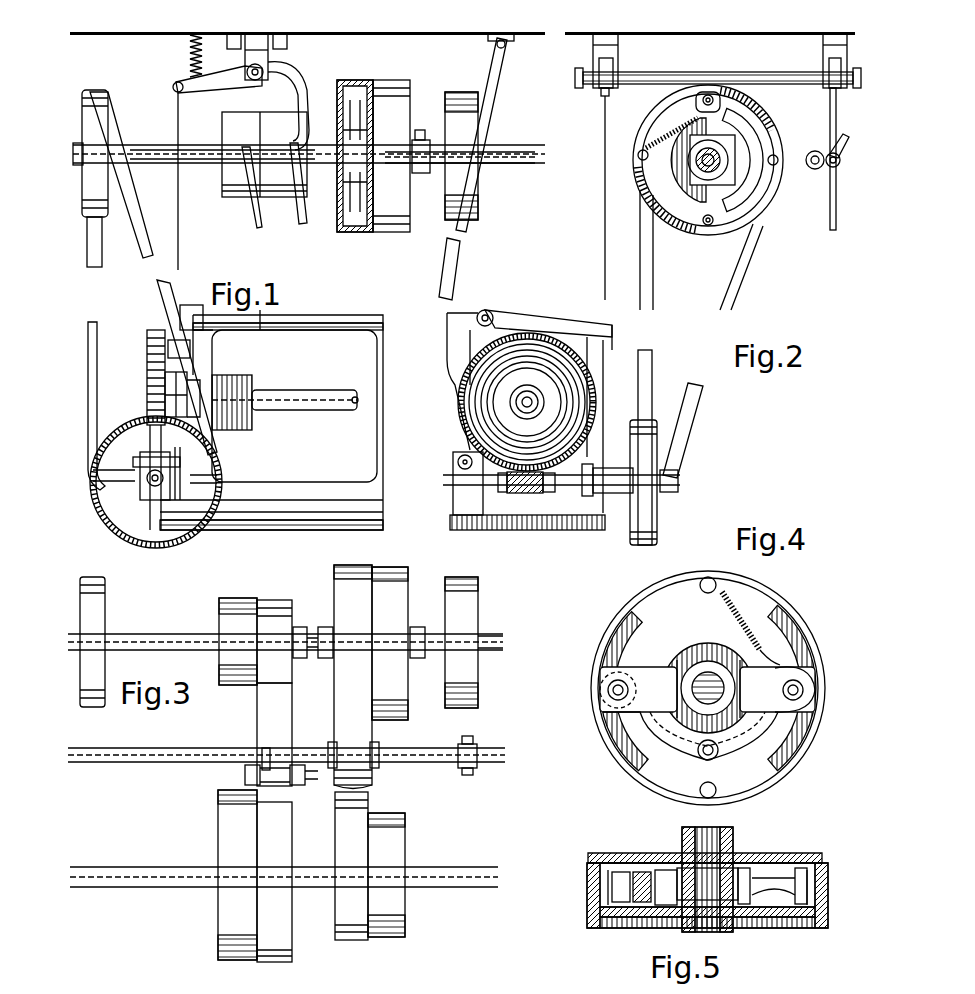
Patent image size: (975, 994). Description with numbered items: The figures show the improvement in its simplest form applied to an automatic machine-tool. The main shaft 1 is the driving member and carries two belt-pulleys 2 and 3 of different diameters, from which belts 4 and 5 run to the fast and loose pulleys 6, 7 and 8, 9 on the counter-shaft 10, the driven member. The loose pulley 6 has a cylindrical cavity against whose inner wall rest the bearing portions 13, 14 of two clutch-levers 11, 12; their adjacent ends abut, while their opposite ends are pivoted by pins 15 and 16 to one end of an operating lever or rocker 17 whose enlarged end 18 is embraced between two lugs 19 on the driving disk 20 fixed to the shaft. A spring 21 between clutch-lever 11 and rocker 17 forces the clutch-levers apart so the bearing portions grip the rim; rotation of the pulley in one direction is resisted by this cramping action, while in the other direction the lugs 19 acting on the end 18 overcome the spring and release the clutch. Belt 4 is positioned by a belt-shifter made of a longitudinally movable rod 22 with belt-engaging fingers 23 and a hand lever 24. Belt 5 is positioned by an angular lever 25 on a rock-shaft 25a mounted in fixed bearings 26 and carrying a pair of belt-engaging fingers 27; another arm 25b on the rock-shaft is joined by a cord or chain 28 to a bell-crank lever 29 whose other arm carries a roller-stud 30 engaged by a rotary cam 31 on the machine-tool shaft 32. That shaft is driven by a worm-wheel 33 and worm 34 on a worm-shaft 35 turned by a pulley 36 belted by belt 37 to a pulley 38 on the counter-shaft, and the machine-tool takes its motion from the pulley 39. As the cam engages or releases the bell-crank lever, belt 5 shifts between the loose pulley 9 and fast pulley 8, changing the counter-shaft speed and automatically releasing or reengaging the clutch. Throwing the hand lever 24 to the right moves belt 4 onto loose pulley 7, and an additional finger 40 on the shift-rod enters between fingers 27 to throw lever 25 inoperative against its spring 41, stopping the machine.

In FIG. 3, the main shaft 1 is at (448, 866).
In FIG. 3, the belt-pulley 2 is at (405, 934).
In FIG. 3, the belt-pulley 3 is at (218, 950).
In FIG. 3, the belt 4 is at (374, 782).
In FIG. 3, the belt 5 is at (257, 724).
In FIG. 1, the loose pulley 6 is at (348, 80).
In FIG. 2, the loose pulley 6 is at (784, 196).
In FIG. 3, the loose pulley 6 is at (334, 575).
In FIG. 4, the loose pulley 6 is at (767, 583).
In FIG. 5, the loose pulley 6 is at (587, 896).
In FIG. 1, the loose pulley 7 is at (405, 80).
In FIG. 3, the loose pulley 7 is at (402, 567).
In FIG. 3, the fast pulley 8 is at (232, 600).
In FIG. 3, the loose pulley 9 is at (288, 602).
In FIG. 1, the counter-shaft 10 is at (500, 152).
In FIG. 2, the counter-shaft 10 is at (700, 162).
In FIG. 3, the counter-shaft 10 is at (491, 634).
In FIG. 2, the clutch-lever 11 is at (679, 160).
In FIG. 4, the clutch-lever 11 is at (708, 687).
In FIG. 5, the clutch-lever 11 is at (780, 905).
In FIG. 2, the clutch-lever 12 is at (733, 192).
In FIG. 4, the clutch-lever 12 is at (690, 748).
In FIG. 4, the bearing portion 13 is at (705, 577).
In FIG. 5, the bearing portion 13 is at (737, 850).
In FIG. 5, the bearing portion 14 is at (700, 830).
In FIG. 4, the pin 15 is at (637, 691).
In FIG. 5, the pin 15 is at (640, 928).
In FIG. 4, the pin 16 is at (600, 692).
In FIG. 2, the operating lever or rocker 17 is at (728, 158).
In FIG. 4, the operating lever or rocker 17 is at (707, 690).
In FIG. 5, the operating lever or rocker 17 is at (667, 870).
In FIG. 4, the enlarged end 18 is at (803, 682).
In FIG. 4, the lugs 19 is at (810, 703).
In FIG. 5, the lugs 19 is at (815, 862).
In FIG. 1, the driving disk 20 is at (340, 228).
In FIG. 5, the driving disk 20 is at (645, 853).
In FIG. 2, the spring 21 is at (672, 129).
In FIG. 4, the spring 21 is at (765, 632).
In FIG. 1, the rod 22 is at (193, 165).
In FIG. 3, the rod 22 is at (429, 748).
In FIG. 3, the belt-engaging fingers 23 is at (330, 742).
In FIG. 1, the hand lever 24 is at (465, 228).
In FIG. 3, the hand lever 24 is at (470, 743).
In FIG. 1, the angular lever 25 is at (299, 106).
In FIG. 1, the rock-shaft 25a is at (266, 86).
In FIG. 2, the rock-shaft 25a is at (744, 72).
In FIG. 1, the arm 25b is at (196, 92).
In FIG. 2, the arm 25b is at (603, 92).
In FIG. 1, the fixed bearings 26 is at (272, 52).
In FIG. 2, the fixed bearings 26 is at (620, 60).
In FIG. 1, the belt-engaging fingers 27 is at (303, 225).
In FIG. 2, the belt-engaging fingers 27 is at (831, 127).
In FIG. 3, the belt-engaging fingers 27 is at (245, 775).
In FIG. 1, the cord or chain 28 is at (178, 248).
In FIG. 2, the cord or chain 28 is at (619, 198).
In FIG. 1, the bell-crank lever 29 is at (180, 349).
In FIG. 2, the bell-crank lever 29 is at (490, 311).
In FIG. 2, the roller-stud 30 is at (460, 413).
In FIG. 1, the rotary cam 31 is at (190, 380).
In FIG. 2, the rotary cam 31 is at (525, 397).
In FIG. 1, the shaft 32 is at (306, 390).
In FIG. 1, the worm-wheel 33 is at (148, 339).
In FIG. 2, the worm-wheel 33 is at (594, 386).
In FIG. 1, the worm 34 is at (140, 490).
In FIG. 2, the worm 34 is at (548, 493).
In FIG. 2, the worm-shaft 35 is at (450, 483).
In FIG. 1, the pulley 36 is at (172, 535).
In FIG. 2, the pulley 36 is at (631, 422).
In FIG. 1, the belt 37 is at (104, 262).
In FIG. 2, the belt 37 is at (654, 374).
In FIG. 1, the pulley 38 is at (86, 218).
In FIG. 3, the pulley 38 is at (105, 600).
In FIG. 1, the pulley 39 is at (461, 156).
In FIG. 3, the pulley 39 is at (461, 642).
In FIG. 2, the additional finger 40 is at (846, 134).
In FIG. 3, the additional finger 40 is at (268, 766).
In FIG. 1, the spring 41 is at (190, 48).